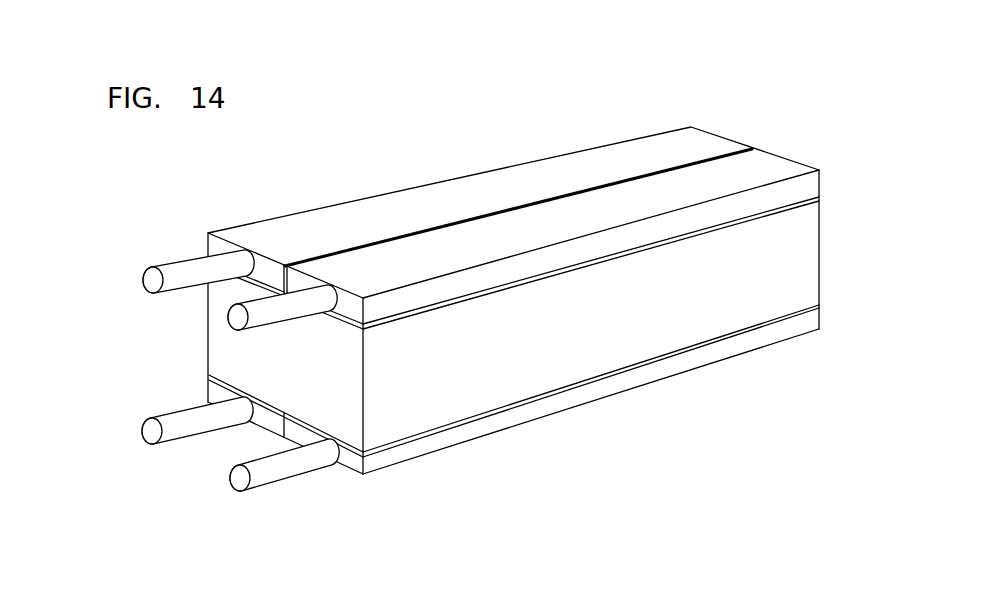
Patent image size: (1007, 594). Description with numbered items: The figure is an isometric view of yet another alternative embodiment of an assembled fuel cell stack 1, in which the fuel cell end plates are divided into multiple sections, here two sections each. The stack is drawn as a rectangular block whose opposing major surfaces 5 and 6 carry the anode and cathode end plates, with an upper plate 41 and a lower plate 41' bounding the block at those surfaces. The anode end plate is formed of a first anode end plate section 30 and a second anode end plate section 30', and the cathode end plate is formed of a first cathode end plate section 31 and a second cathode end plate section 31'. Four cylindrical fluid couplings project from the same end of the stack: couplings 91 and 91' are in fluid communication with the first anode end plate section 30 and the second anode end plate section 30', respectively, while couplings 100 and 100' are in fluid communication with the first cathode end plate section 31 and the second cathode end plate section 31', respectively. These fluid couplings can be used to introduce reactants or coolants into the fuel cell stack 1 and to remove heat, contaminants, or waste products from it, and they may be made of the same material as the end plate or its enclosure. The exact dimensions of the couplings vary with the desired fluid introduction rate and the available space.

The fuel cell stack 1 is at (823, 57).
The upper substrate 41 is at (545, 212).
The lower substrate 41' is at (549, 390).
The major surface 5 is at (822, 198).
The major surface 6 is at (820, 305).
The first anode end plate section 30 is at (208, 239).
The second anode end plate section 30' is at (218, 358).
The first cathode end plate section 31 is at (216, 436).
The second cathode end plate section 31' is at (323, 478).
The coupling 91 is at (168, 296).
The coupling 91' is at (205, 335).
The coupling 100 is at (154, 447).
The coupling 100' is at (260, 499).